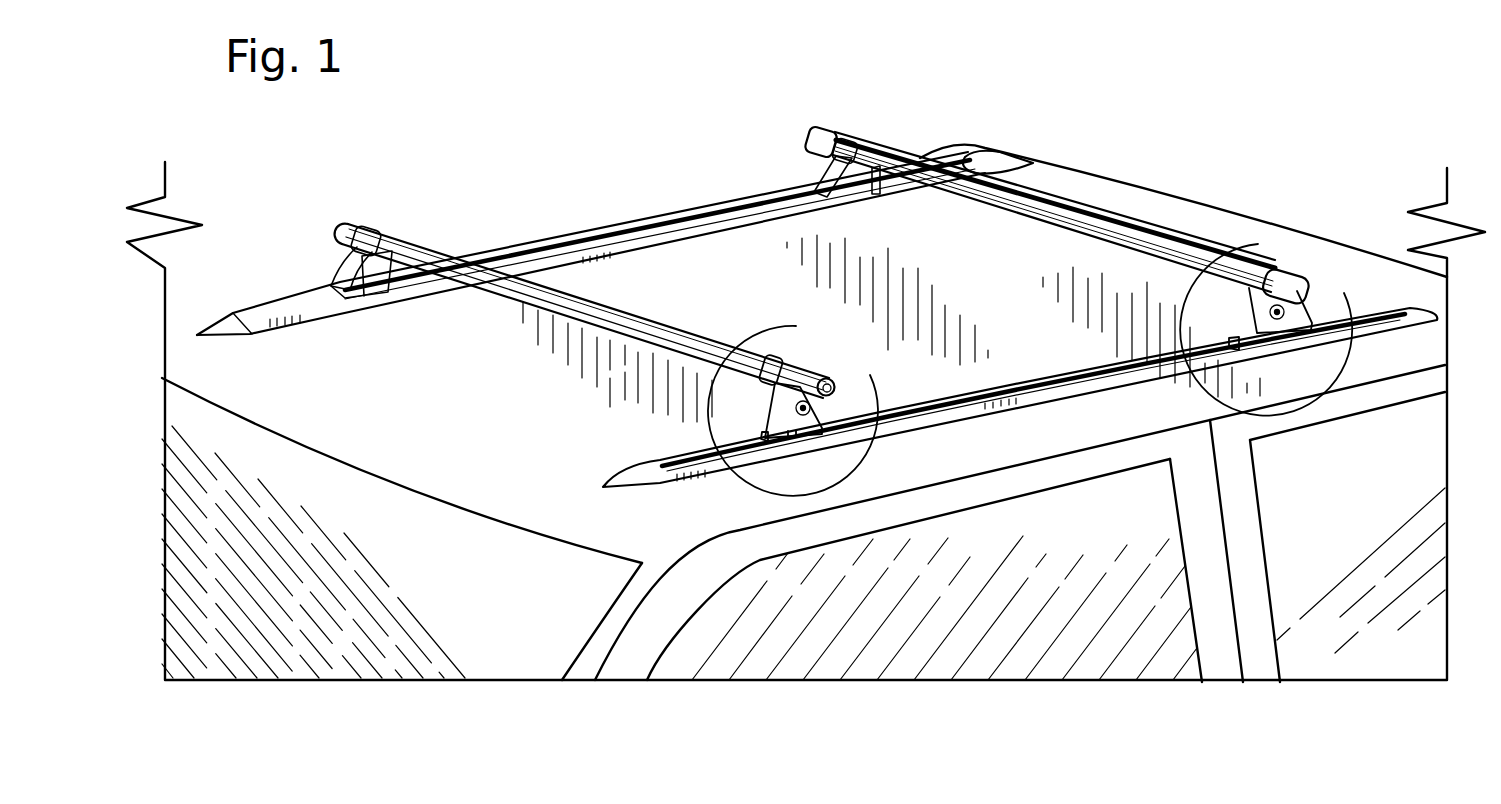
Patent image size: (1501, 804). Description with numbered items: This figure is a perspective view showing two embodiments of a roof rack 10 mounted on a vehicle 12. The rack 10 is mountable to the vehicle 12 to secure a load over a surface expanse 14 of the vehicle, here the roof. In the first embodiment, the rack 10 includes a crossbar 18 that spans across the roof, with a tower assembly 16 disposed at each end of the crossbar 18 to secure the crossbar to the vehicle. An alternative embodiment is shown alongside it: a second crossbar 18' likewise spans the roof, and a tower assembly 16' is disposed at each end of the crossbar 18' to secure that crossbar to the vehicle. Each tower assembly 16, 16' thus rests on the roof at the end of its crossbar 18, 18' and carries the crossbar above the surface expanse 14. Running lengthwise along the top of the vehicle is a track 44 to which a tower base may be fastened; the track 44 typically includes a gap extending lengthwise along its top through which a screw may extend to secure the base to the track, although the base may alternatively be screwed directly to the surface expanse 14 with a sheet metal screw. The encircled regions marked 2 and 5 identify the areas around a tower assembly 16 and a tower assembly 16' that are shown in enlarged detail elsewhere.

The roof rack 10 is at (721, 50).
The vehicle 12 is at (1143, 185).
The surface expanse 14 is at (1003, 282).
The tower assembly 16 is at (813, 391).
The tower assembly 16' is at (1290, 302).
The crossbar 18 is at (585, 311).
The crossbar 18' is at (1057, 216).
The track 44 is at (1027, 387).
The detail view indicator FIG. 2 is at (803, 322).
The detail view indicator FIG. 5 is at (1273, 245).